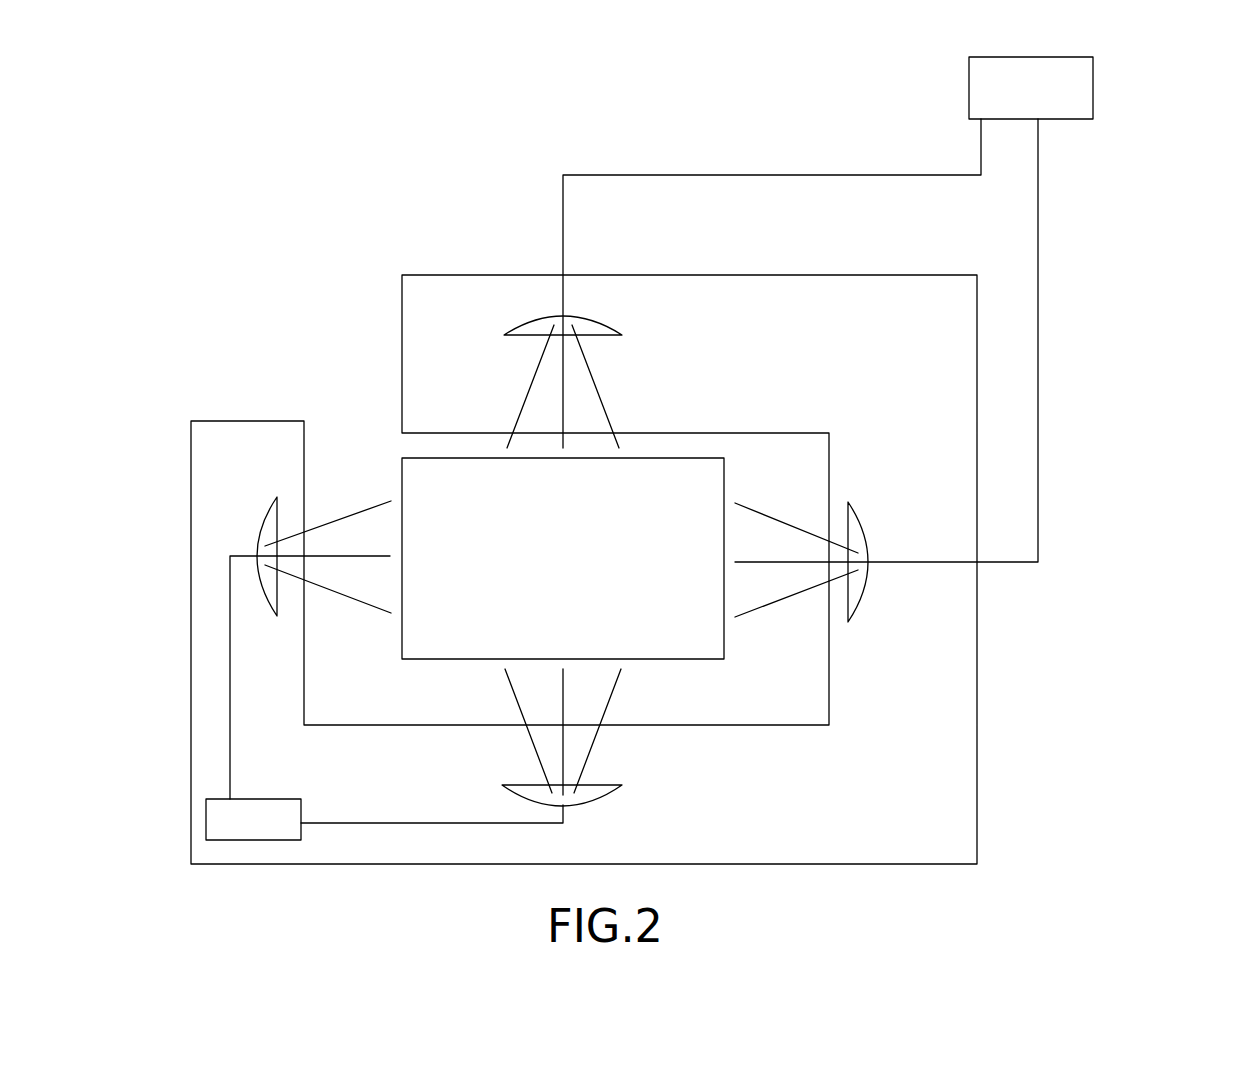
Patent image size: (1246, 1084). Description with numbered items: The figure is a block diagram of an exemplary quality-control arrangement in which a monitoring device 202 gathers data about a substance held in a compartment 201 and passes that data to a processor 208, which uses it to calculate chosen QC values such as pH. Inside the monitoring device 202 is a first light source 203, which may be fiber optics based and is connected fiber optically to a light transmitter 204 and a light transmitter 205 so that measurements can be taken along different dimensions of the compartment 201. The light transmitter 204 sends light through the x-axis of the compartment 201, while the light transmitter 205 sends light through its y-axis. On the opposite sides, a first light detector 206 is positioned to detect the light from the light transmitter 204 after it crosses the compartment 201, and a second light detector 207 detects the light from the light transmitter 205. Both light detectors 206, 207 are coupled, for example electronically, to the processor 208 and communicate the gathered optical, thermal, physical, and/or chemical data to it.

The compartment 201 is at (581, 574).
The monitoring device 202 is at (831, 300).
The first light source 203 is at (275, 799).
The light transmitter 204 is at (258, 540).
The light transmitter 205 is at (610, 787).
The first light detector 206 is at (862, 523).
The second light detector 207 is at (578, 316).
The processor 208 is at (1093, 87).